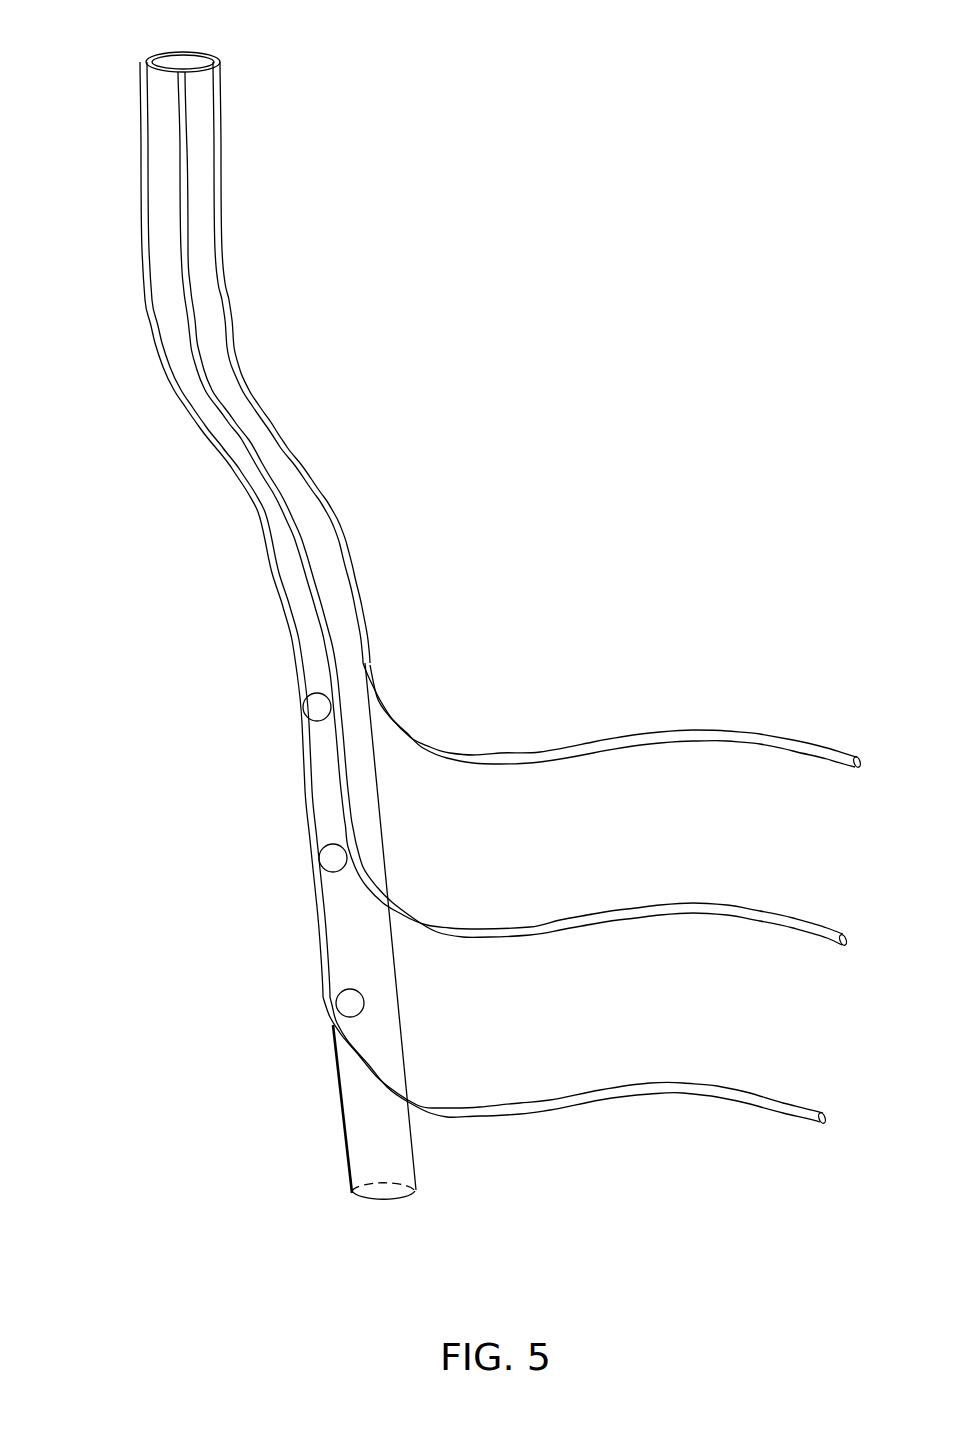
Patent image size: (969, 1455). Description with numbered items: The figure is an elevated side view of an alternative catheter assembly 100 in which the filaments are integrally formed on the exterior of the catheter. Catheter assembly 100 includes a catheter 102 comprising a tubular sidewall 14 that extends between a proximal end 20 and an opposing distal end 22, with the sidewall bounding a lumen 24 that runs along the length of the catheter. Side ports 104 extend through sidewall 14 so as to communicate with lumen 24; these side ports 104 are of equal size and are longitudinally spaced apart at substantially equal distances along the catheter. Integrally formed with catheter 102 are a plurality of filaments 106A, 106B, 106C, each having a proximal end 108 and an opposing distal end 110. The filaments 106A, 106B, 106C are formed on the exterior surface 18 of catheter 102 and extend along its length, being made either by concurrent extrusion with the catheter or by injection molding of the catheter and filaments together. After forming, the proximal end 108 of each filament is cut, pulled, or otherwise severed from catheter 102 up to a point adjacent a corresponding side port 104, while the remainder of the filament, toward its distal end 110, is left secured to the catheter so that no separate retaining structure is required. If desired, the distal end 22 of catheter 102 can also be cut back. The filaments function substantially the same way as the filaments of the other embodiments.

The catheter assembly 100 is at (533, 217).
The catheter 102 is at (310, 512).
The side ports 104 is at (308, 712).
The filament 106A is at (705, 735).
The filament 106B is at (710, 908).
The filament 106C is at (713, 1092).
The proximal end 108 is at (140, 155).
The distal end 110 is at (638, 1092).
The tubular sidewall 14 is at (147, 60).
The exterior surface 18 is at (180, 375).
The proximal end 20 is at (197, 207).
The distal end 22 is at (388, 1042).
The lumen 24 is at (188, 62).